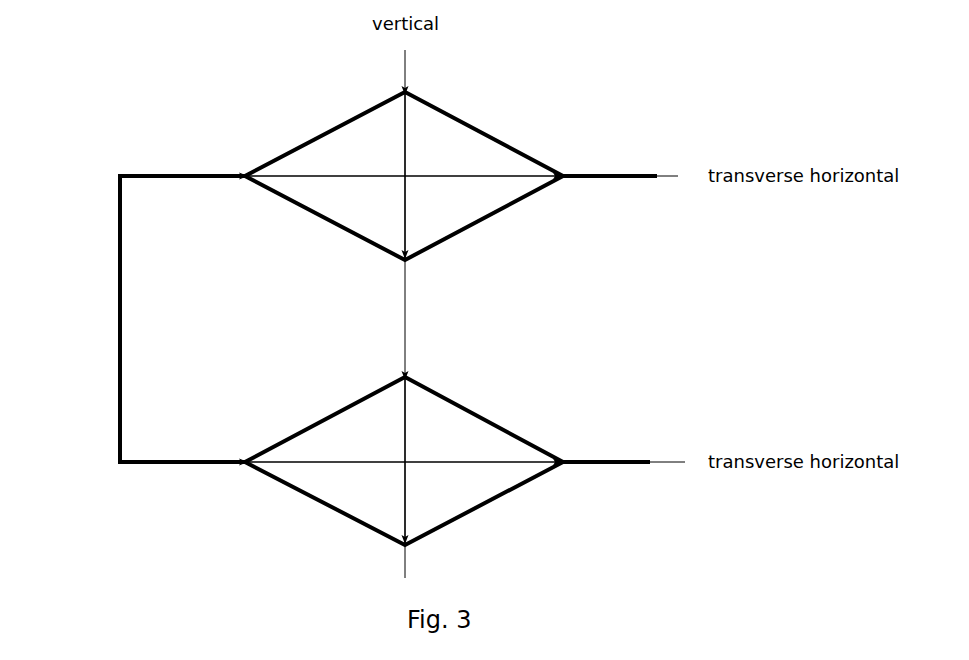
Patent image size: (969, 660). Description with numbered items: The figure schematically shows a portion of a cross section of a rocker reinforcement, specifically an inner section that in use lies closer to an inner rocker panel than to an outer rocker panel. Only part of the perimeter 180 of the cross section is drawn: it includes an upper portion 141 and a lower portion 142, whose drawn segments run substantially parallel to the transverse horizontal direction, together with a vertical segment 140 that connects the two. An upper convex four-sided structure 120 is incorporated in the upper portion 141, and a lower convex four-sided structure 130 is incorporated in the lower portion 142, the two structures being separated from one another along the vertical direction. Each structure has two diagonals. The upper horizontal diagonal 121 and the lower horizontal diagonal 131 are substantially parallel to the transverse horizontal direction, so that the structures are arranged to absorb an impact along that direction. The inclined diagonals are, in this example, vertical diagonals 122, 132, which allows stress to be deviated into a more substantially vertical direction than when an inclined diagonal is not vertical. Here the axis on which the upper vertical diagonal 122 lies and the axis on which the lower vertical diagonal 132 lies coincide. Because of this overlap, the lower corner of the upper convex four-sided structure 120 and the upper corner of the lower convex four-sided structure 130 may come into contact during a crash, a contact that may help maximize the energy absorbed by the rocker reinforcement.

The upper convex four-sided structure 120 is at (308, 128).
The upper horizontal diagonal 121 is at (487, 174).
The upper inclined (vertical) diagonal 122 is at (403, 150).
The lower convex four-sided structure 130 is at (499, 508).
The lower horizontal diagonal 131 is at (493, 460).
The lower inclined (vertical) diagonal 132 is at (403, 438).
The vertical segment 140 is at (119, 313).
The upper portion 141 is at (621, 165).
The lower portion 142 is at (608, 452).
The perimeter 180 is at (130, 152).